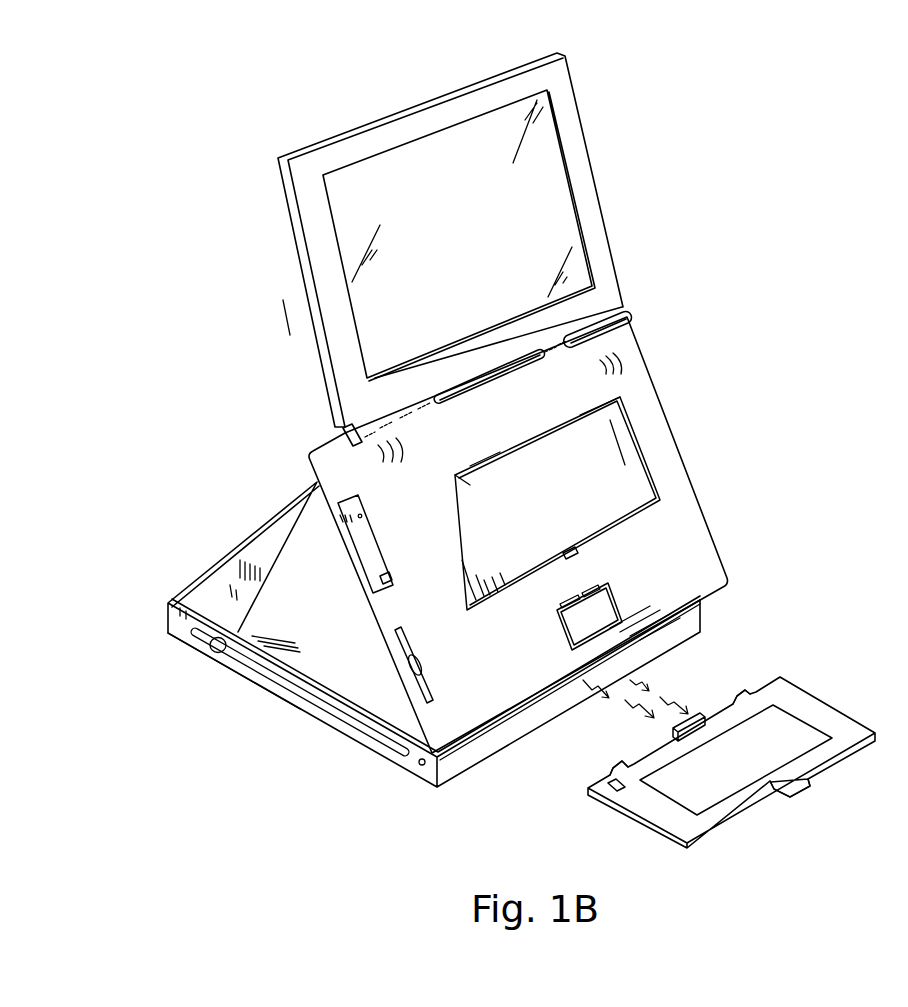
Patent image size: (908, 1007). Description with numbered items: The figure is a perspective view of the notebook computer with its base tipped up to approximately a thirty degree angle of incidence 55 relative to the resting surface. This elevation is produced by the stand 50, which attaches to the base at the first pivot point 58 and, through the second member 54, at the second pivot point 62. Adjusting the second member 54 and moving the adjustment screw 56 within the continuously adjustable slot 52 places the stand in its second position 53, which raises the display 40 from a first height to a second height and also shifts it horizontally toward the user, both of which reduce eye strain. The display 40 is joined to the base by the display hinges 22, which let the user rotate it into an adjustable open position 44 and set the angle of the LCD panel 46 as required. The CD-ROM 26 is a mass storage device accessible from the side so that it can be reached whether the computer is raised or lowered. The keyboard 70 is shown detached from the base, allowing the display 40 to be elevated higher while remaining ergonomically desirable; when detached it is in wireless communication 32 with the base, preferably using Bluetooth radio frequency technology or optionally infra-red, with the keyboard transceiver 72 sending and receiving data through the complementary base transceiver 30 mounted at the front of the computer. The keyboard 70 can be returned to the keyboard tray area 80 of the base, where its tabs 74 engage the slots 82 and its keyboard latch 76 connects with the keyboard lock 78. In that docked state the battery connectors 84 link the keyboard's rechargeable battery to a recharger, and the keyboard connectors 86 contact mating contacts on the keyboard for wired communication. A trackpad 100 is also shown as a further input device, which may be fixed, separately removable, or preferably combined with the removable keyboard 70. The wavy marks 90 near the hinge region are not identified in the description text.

The display hinges 22 is at (422, 409).
The CD-ROM 26 is at (345, 531).
The base transceiver 30 is at (607, 650).
The wireless communication 32 is at (660, 698).
The display 40 is at (292, 222).
The open position 44 is at (306, 254).
The panel 46 is at (363, 298).
The stand 50 is at (404, 763).
The slot 52 is at (197, 632).
The stand second position 53 is at (241, 677).
The second member 54 is at (250, 598).
The angle of incidence 55 is at (370, 720).
The adjustment screw 56 is at (213, 650).
The first pivot point 58 is at (420, 768).
The second pivot point 62 is at (318, 481).
The keyboard 70 is at (770, 705).
The keyboard transceiver 72 is at (677, 737).
The tabs 74 is at (745, 692).
The keyboard latch 76 is at (805, 780).
The keyboard lock 78 is at (565, 549).
The keyboard tray area 80 is at (557, 503).
The slots 82 is at (618, 417).
The battery connectors 84 is at (453, 477).
The keyboard connectors 86 is at (608, 420).
The wireless signal 90 is at (362, 452).
The trackpad 100 is at (593, 618).